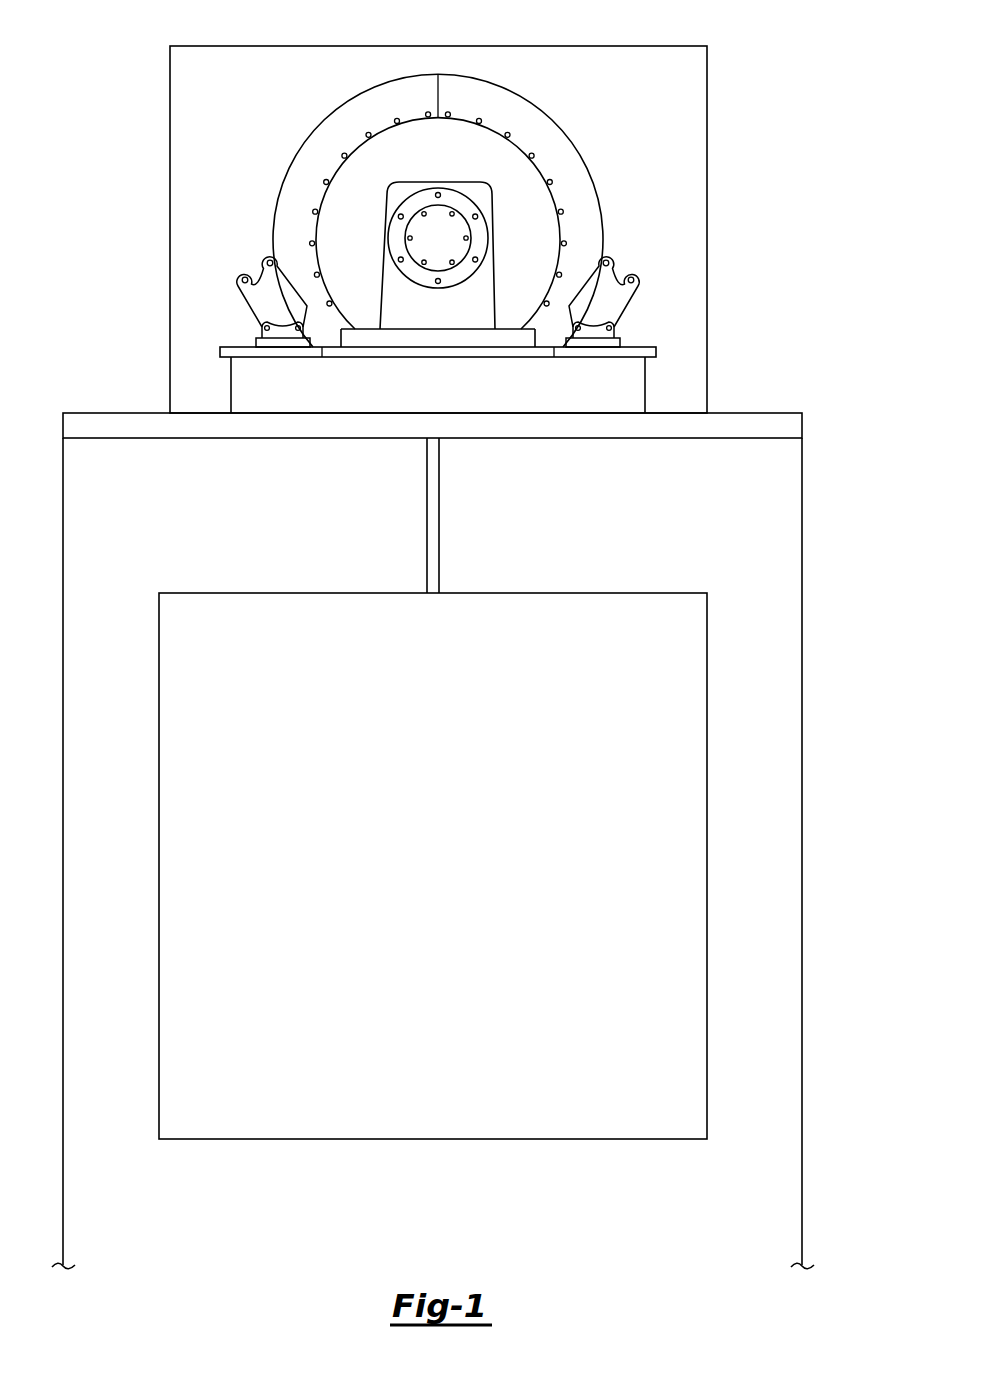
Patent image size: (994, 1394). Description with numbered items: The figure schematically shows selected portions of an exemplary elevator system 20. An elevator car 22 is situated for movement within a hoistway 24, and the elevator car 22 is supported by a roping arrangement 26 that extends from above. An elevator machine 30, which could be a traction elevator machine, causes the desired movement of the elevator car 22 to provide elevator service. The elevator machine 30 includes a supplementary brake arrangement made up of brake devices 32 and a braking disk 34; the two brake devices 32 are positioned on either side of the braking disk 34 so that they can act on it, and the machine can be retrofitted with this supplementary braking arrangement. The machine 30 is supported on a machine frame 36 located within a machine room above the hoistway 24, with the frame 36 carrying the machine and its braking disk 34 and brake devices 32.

The elevator system 20 is at (731, 81).
The elevator car 22 is at (660, 592).
The hoistway 24 is at (806, 585).
The roping arrangement 26 is at (439, 516).
The elevator machine 30 is at (438, 176).
The brake devices 32 is at (260, 294).
The braking disk 34 is at (300, 190).
The machine frame 36 is at (176, 116).